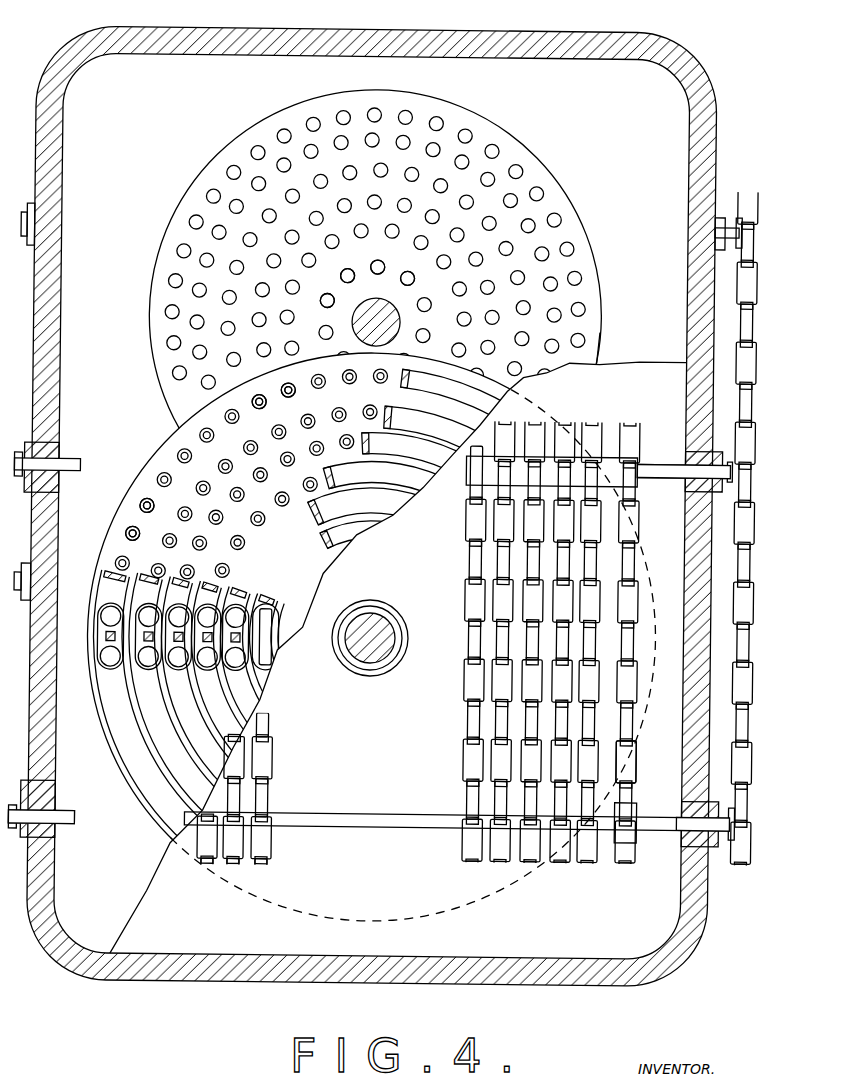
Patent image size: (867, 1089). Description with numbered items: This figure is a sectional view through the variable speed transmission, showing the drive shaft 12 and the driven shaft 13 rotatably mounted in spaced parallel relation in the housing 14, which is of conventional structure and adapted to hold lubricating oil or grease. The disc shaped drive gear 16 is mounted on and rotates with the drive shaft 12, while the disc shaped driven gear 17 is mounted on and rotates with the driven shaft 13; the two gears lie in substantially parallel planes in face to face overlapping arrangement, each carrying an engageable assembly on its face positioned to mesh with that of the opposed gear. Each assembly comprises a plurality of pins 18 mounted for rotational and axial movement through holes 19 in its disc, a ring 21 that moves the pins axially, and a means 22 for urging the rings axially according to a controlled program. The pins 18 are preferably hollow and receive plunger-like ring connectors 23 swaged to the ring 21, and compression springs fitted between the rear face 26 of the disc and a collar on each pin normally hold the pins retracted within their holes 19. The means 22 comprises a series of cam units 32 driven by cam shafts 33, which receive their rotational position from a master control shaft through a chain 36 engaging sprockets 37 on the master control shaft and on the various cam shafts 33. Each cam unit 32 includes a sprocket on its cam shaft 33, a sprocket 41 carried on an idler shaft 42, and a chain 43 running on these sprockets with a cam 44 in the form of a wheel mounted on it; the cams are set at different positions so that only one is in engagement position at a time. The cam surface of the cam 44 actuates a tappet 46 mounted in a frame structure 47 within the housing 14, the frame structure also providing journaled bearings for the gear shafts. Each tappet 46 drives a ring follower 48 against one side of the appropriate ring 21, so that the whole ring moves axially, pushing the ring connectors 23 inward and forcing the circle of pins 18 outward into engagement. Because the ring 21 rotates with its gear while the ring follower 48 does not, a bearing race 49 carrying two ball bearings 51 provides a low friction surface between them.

The drive shaft 12 is at (360, 340).
The driven shaft 13 is at (368, 628).
The housing 14 is at (628, 44).
The drive gear 16 is at (228, 148).
The driven gear 17 is at (358, 637).
The pins 18 is at (381, 266).
The holes 19 is at (339, 276).
The ring 21 is at (145, 778).
The means for urging the rings axially 22 is at (543, 658).
The ring connectors 23 is at (124, 535).
The rear face 26 is at (268, 437).
The cam units 32 is at (468, 846).
The cam shafts 33 is at (633, 843).
The chain 36 is at (758, 420).
The sprockets 37 is at (741, 224).
The sprocket 41 is at (641, 462).
The idler shaft 42 is at (648, 470).
The chain 43 is at (634, 742).
The cam 44 is at (640, 660).
The tappet 46 is at (272, 630).
The frame structure 47 is at (150, 894).
The ring follower 48 is at (108, 640).
The bearing race 49 is at (112, 608).
The ball bearings 51 is at (108, 619).